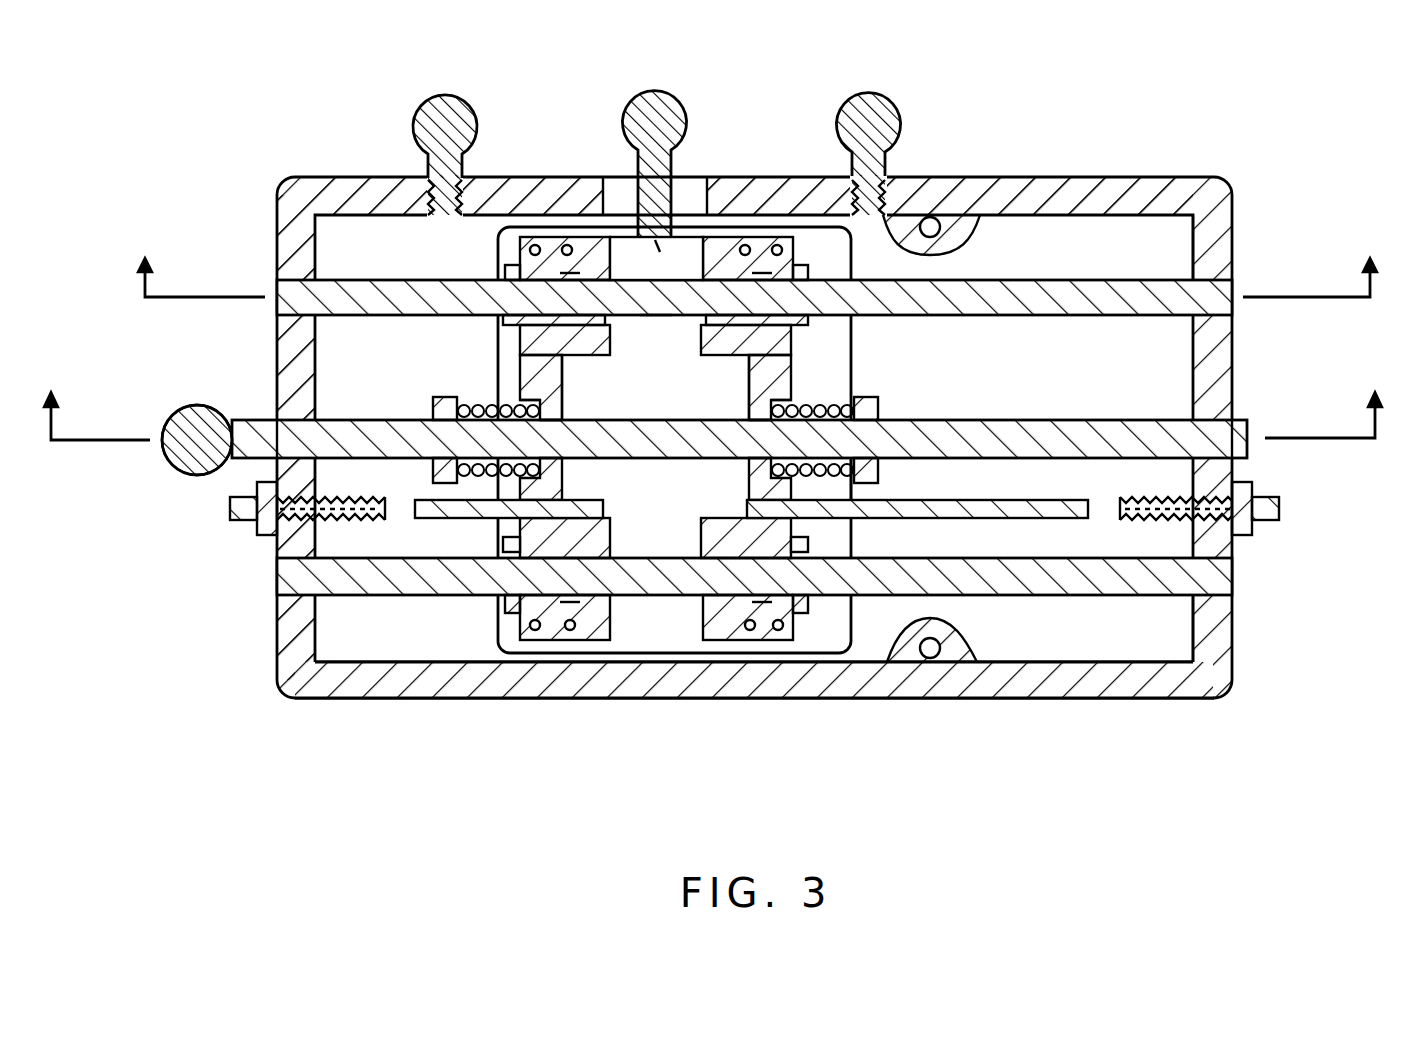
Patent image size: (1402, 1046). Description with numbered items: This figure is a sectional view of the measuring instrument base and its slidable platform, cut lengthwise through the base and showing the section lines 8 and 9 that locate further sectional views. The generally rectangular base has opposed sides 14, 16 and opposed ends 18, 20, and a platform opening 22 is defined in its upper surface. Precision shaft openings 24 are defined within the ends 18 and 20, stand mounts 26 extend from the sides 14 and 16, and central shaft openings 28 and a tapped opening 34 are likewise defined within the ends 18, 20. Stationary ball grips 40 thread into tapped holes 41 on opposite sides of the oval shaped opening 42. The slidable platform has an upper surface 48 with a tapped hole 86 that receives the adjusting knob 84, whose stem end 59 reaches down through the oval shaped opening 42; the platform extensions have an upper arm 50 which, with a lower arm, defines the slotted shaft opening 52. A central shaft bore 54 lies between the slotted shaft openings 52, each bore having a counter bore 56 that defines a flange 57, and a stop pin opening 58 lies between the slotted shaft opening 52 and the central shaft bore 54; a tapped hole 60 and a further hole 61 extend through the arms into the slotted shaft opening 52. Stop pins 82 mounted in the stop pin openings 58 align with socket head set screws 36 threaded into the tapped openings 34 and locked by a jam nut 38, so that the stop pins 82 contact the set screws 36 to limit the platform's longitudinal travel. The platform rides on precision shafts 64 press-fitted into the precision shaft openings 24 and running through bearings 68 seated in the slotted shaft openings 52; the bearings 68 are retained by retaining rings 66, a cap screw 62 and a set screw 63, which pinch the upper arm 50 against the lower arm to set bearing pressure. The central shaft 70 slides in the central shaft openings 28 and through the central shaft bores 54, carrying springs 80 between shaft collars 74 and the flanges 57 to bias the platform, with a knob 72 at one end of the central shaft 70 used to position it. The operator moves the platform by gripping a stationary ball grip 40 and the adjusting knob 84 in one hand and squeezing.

The section line 8- 8 is at (757, 265).
The section line 9- 9 is at (713, 404).
The side 14 is at (1000, 178).
The side 16 is at (1072, 700).
The end 18 is at (277, 641).
The end 20 is at (1096, 162).
The platform opening 22 is at (856, 332).
The precision shaft openings 24 is at (275, 290).
The stand mounts 26 is at (948, 238).
The central shaft openings 28 is at (272, 420).
The tapped opening 34 is at (322, 512).
The socket head set screws 36 is at (230, 509).
The jam nut 38 is at (263, 536).
The stationary ball grips 40 is at (420, 106).
The tapped holes 41 is at (463, 185).
The oval shaped opening 42 is at (622, 198).
The upper surface 48 is at (642, 509).
The upper arm 50 is at (690, 243).
The slotted shaft opening 52 is at (656, 318).
The central shaft bore 54 is at (572, 417).
The counter bore 56 is at (525, 395).
The flange 57 is at (566, 393).
The stop pin opening 58 is at (505, 500).
The stem tip 59 is at (677, 253).
The tapped hole 60 is at (530, 250).
The hole 61 is at (567, 244).
The cap screw 62 is at (537, 243).
The set screw 63 is at (782, 730).
The precision shafts 64 is at (1130, 279).
The retaining rings 66 is at (505, 272).
The bearings 68 is at (562, 320).
The central shaft 70 is at (1030, 420).
The knob 72 is at (182, 408).
The shaft collars 74 is at (447, 398).
The springs 80 is at (858, 484).
The stop pins 82 is at (452, 520).
The adjusting knob 84 is at (680, 98).
The tapped hole 86 is at (655, 250).